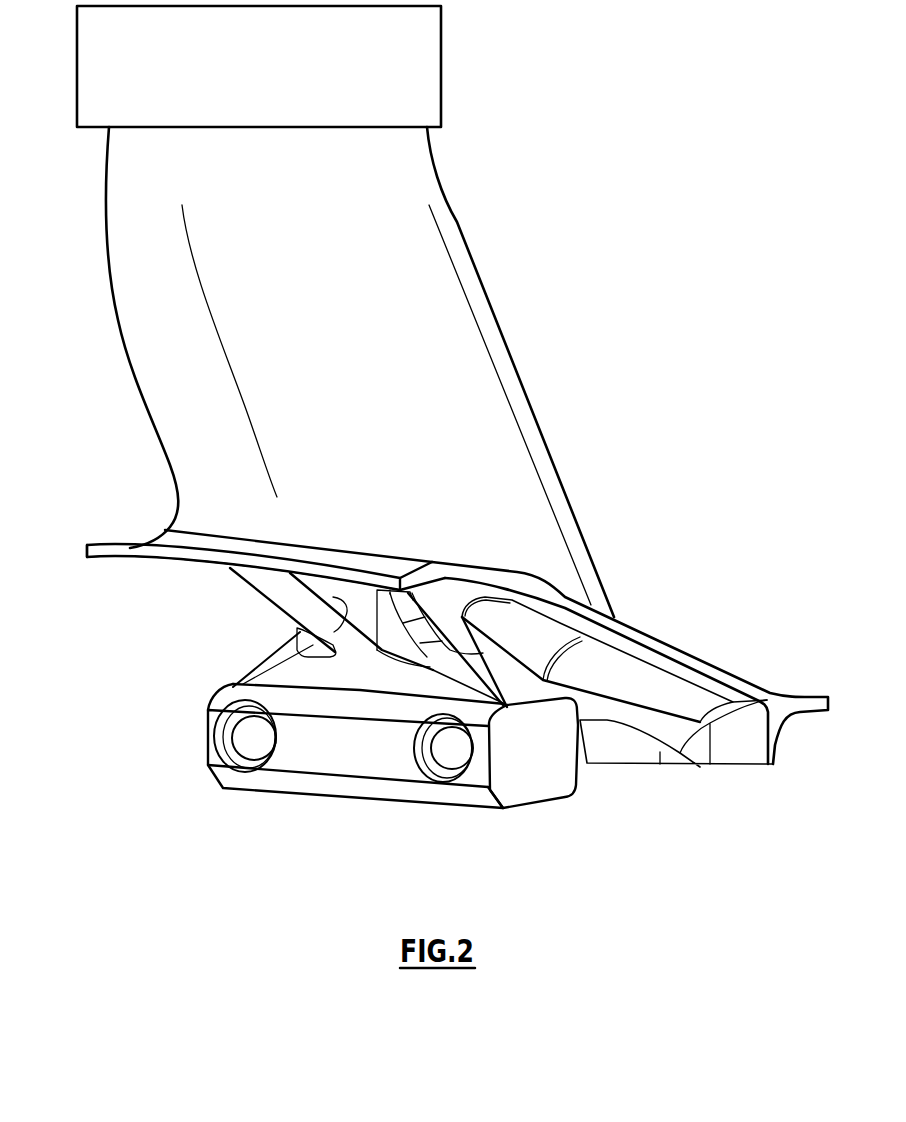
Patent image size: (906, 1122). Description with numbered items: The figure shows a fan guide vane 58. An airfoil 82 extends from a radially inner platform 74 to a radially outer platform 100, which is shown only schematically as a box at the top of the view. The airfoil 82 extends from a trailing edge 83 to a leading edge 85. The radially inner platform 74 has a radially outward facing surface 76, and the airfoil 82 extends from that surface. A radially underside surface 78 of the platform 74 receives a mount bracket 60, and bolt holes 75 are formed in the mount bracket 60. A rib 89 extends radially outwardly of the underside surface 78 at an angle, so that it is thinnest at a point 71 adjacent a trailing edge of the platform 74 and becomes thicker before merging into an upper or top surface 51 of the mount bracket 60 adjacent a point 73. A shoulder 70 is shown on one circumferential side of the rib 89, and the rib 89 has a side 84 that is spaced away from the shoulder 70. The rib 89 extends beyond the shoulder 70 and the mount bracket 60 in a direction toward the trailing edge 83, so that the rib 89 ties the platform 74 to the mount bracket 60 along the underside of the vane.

The radially outer platform 100 is at (186, 80).
The fan guide vane 58 is at (351, 372).
The leading edge 85 is at (498, 320).
The airfoil 82 is at (422, 423).
The trailing edge 83 is at (118, 319).
The radially outward facing surface 76 is at (112, 622).
The radially underside surface 78 is at (243, 596).
The radially inner platform 74 is at (80, 551).
The shoulder 70 is at (426, 637).
The point 71 is at (232, 572).
The rib 89 is at (287, 590).
The side 84 is at (295, 643).
The point 73 is at (350, 640).
The top surface 51 is at (380, 686).
The mount bracket 60 is at (337, 793).
The bolt holes 75 is at (212, 755).